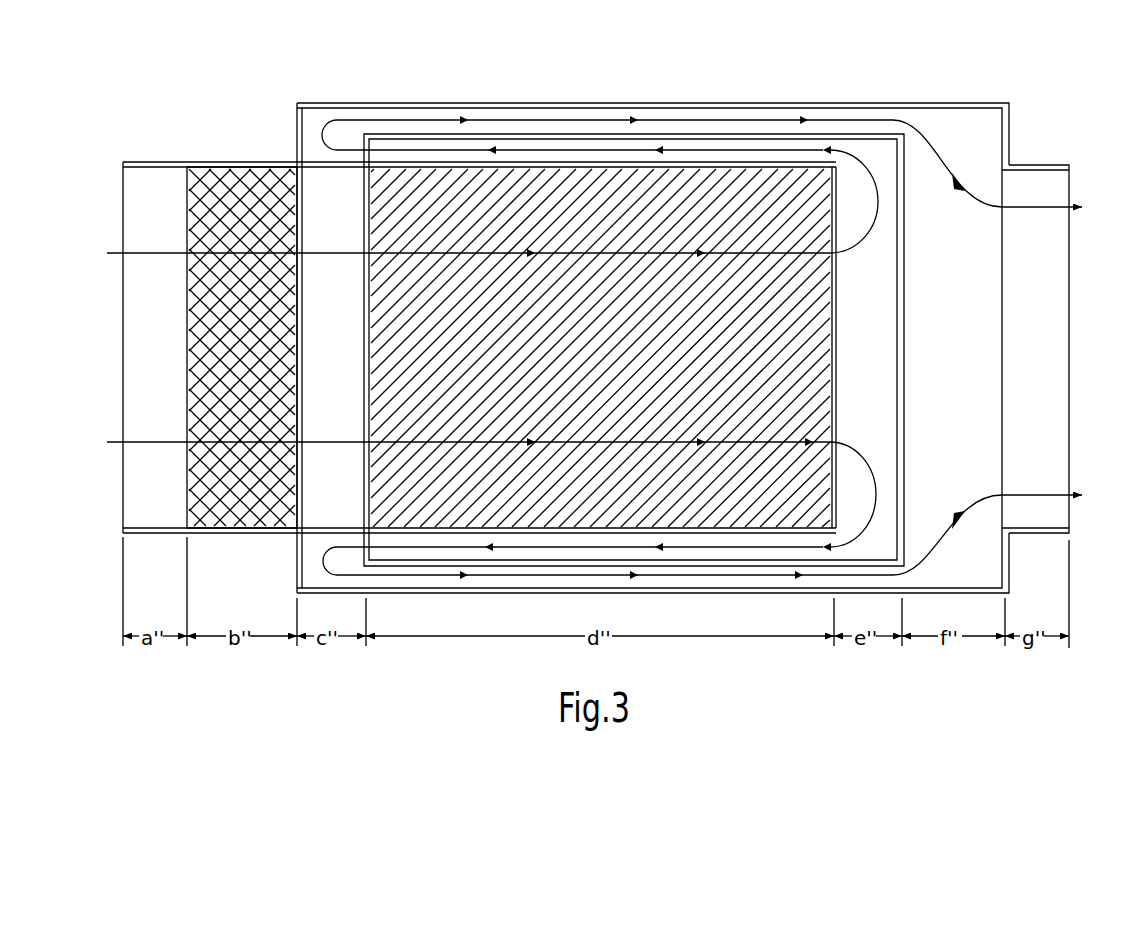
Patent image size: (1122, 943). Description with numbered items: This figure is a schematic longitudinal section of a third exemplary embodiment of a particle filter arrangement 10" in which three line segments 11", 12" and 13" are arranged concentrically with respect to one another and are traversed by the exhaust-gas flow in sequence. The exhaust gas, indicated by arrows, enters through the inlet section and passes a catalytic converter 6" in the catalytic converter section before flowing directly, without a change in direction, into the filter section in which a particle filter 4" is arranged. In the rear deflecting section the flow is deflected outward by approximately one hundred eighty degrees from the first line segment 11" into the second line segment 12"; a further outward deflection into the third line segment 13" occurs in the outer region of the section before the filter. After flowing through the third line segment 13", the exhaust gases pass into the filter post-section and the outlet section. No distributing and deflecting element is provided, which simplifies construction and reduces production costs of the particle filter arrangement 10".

The particle filter 4 is at (367, 231).
The catalytic converter 6 is at (240, 172).
The particle filter arrangement 10 is at (1049, 100).
The first line segment 11 is at (461, 167).
The second line segment 12 is at (540, 141).
The third line segment 13 is at (590, 109).